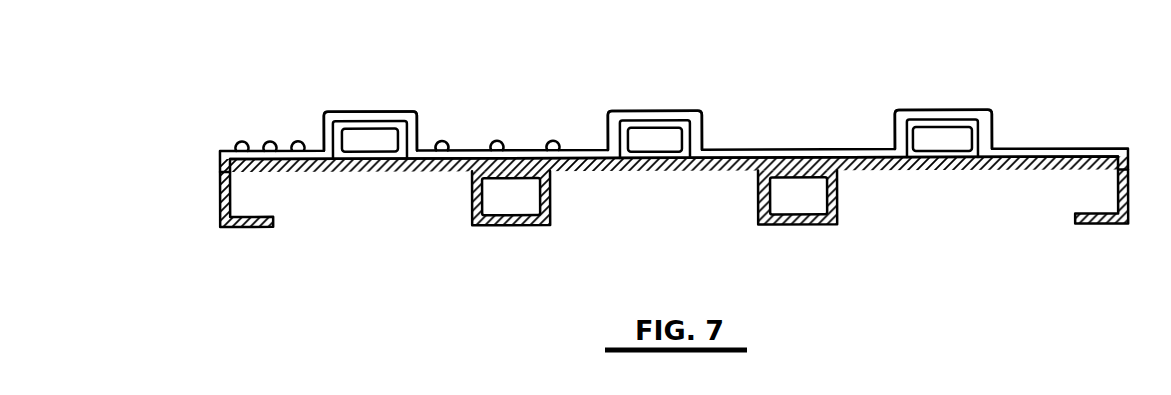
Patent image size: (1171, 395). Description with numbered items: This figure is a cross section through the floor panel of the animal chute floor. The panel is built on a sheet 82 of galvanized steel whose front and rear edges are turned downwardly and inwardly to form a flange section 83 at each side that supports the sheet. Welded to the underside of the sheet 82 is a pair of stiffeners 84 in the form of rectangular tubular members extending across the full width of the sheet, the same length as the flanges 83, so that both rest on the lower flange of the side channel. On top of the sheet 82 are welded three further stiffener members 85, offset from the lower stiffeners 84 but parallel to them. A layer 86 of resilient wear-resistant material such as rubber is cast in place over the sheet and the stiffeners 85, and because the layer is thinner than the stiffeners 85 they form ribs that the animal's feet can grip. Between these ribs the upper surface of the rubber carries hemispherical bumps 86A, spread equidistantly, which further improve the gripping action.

The sheet 82 is at (375, 172).
The flange section 83 is at (255, 226).
The stiffeners 84 is at (512, 226).
The stiffener members 85 is at (376, 122).
The layer of resilient wear resistant material 86 is at (255, 150).
The hemispherical bumps 86A is at (452, 138).